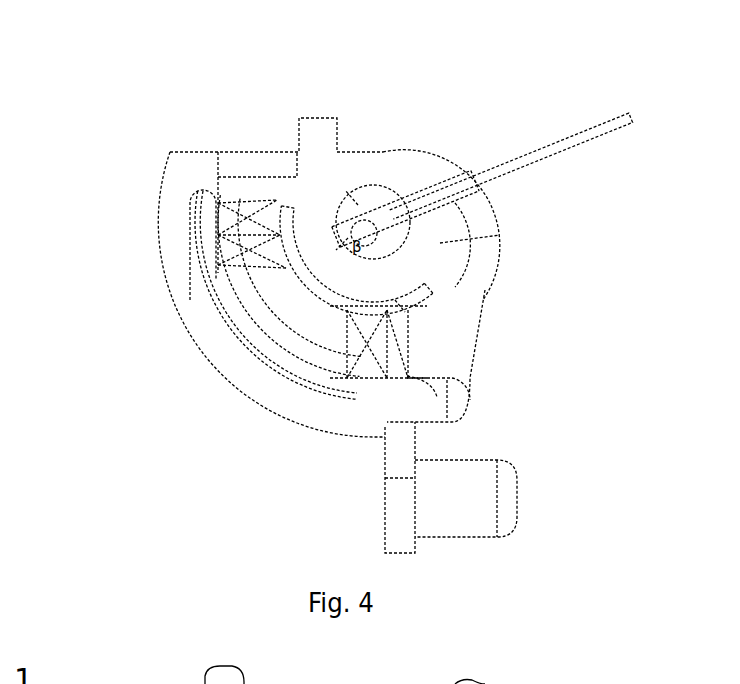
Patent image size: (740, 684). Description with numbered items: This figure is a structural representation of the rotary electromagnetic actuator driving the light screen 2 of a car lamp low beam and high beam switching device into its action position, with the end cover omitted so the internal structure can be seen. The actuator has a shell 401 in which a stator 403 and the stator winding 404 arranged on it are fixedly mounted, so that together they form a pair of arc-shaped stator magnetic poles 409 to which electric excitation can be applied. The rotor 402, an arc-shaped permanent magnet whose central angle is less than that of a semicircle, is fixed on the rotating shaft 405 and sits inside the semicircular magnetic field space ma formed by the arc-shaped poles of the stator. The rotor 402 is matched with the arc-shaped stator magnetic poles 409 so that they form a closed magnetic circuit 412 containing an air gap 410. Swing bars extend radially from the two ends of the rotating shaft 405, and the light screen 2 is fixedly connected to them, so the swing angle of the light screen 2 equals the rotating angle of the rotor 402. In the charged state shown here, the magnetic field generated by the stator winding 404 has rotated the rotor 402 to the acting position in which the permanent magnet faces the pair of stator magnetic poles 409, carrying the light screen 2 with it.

The shell 401 is at (152, 180).
The rotor 402 is at (400, 271).
The stator 403 is at (237, 393).
The stator winding 404 is at (223, 313).
The rotating shaft 405 is at (350, 190).
The pair of arc-shaped stator magnetic poles 409 is at (247, 257).
The air gap 410 is at (433, 313).
The closed magnetic circuit 412 is at (383, 417).
The light screen 2 is at (600, 100).
The semicircular magnetic field space ma is at (480, 277).